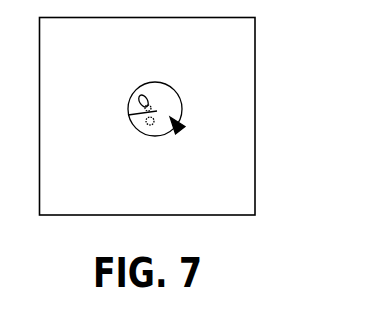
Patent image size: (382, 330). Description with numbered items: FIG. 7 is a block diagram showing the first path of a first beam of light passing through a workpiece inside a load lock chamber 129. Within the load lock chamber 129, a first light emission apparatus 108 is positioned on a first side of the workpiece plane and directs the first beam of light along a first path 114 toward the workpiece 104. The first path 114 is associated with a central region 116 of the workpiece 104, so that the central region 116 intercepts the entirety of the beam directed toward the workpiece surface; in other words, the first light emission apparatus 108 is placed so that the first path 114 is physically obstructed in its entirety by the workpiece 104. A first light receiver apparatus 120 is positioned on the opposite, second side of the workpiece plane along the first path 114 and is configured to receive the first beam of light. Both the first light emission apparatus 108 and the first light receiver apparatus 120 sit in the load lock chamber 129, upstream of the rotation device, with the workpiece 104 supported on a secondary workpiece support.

The load lock chamber 129 is at (255, 43).
The workpiece 104 is at (178, 92).
The first light emission apparatus 108 is at (139, 94).
The first path 114 is at (128, 115).
The first light receiver apparatus 120 is at (146, 126).
The central region 116 is at (182, 131).